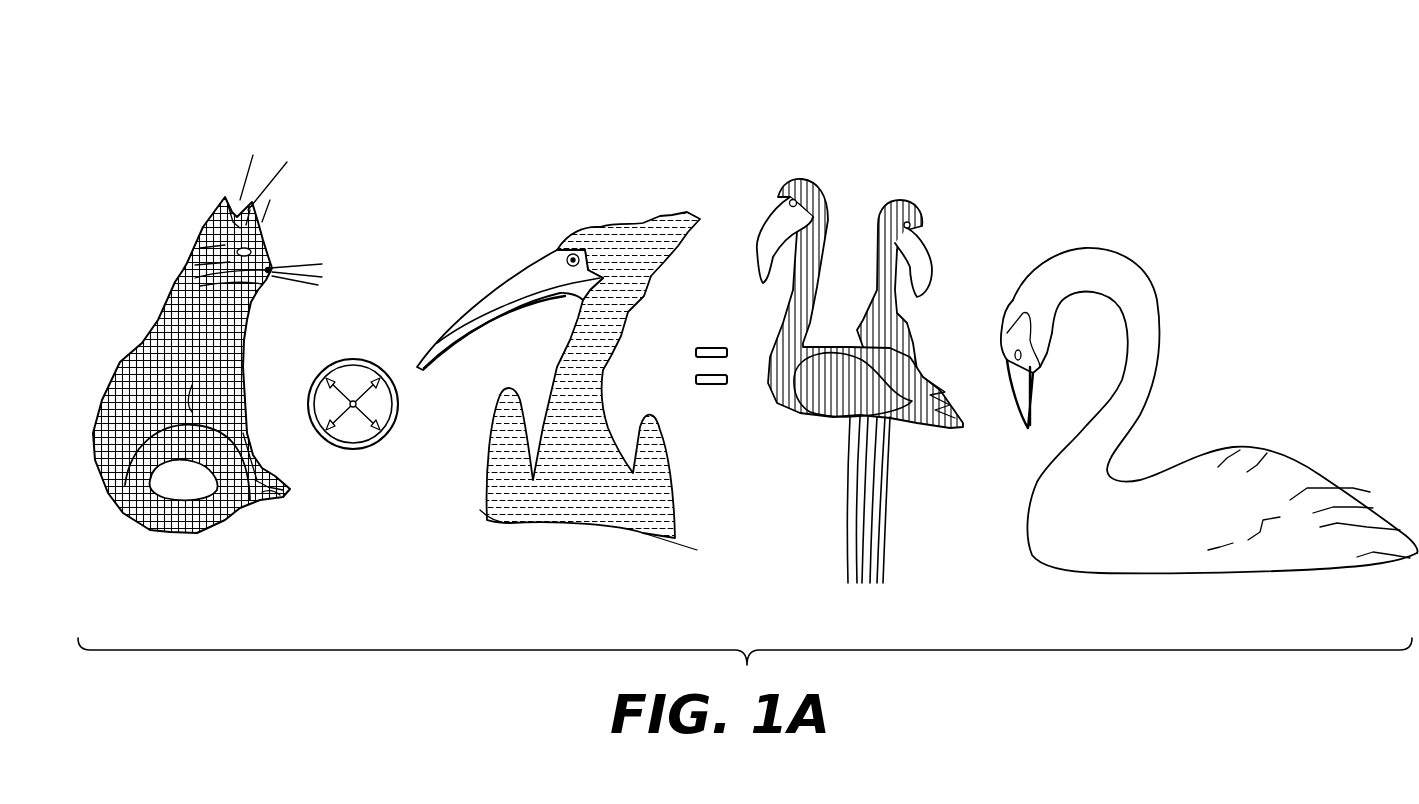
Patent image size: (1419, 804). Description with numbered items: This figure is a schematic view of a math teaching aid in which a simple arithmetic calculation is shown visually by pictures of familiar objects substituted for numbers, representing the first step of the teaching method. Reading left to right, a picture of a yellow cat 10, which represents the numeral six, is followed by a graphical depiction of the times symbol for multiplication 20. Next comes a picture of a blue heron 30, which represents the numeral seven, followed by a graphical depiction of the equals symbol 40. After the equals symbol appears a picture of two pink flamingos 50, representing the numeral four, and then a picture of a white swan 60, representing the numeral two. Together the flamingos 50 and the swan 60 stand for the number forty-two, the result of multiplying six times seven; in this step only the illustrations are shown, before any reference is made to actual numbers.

The yellow cat 10 is at (216, 197).
The multiplication symbol 20 is at (365, 361).
The blue heron 30 is at (505, 282).
The equals symbol 40 is at (717, 340).
The two pink flamingos 50 is at (814, 182).
The white swan 60 is at (1090, 246).